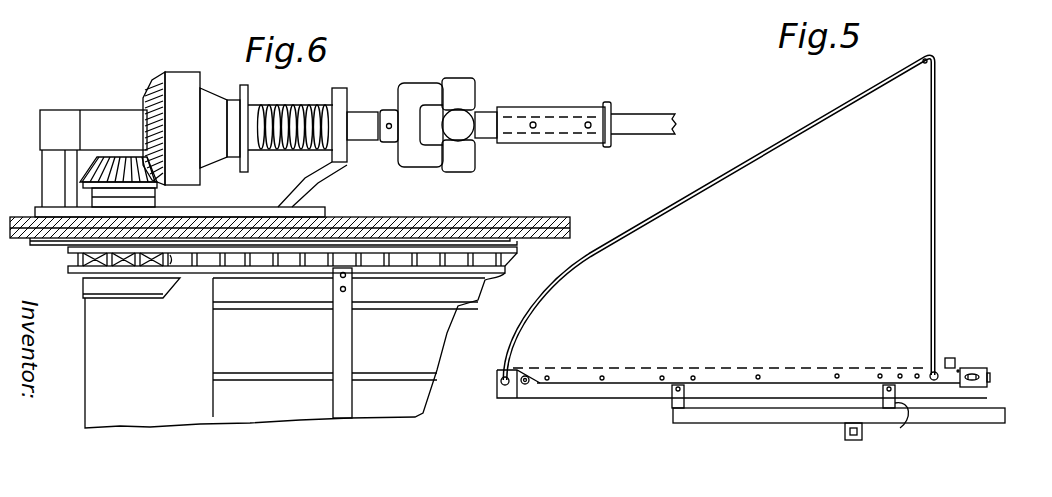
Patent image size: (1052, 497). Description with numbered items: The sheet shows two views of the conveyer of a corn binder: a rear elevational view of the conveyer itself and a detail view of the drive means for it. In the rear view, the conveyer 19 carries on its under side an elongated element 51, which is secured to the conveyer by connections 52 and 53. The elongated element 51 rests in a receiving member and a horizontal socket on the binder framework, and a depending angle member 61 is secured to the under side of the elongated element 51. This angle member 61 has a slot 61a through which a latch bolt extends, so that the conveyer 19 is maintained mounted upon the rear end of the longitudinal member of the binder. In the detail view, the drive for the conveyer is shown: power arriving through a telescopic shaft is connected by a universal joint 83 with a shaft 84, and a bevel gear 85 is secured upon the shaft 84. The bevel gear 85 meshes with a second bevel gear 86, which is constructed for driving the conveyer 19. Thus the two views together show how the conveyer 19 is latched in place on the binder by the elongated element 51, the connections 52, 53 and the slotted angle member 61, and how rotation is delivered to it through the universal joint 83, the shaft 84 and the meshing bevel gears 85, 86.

In FIG. 6, the conveyer 19 is at (461, 211).
In FIG. 5, the conveyer 19 is at (613, 395).
In FIG. 5, the elongated element 51 is at (757, 421).
In FIG. 5, the connection 52 is at (672, 400).
In FIG. 5, the connection 53 is at (900, 428).
In FIG. 5, the depending angle member 61 is at (845, 436).
In FIG. 5, the slot 61a is at (862, 432).
In FIG. 6, the universal joint 83 is at (458, 78).
In FIG. 6, the shaft 84 is at (387, 110).
In FIG. 6, the bevel gear 85 is at (154, 95).
In FIG. 6, the bevel gear 86 is at (97, 166).